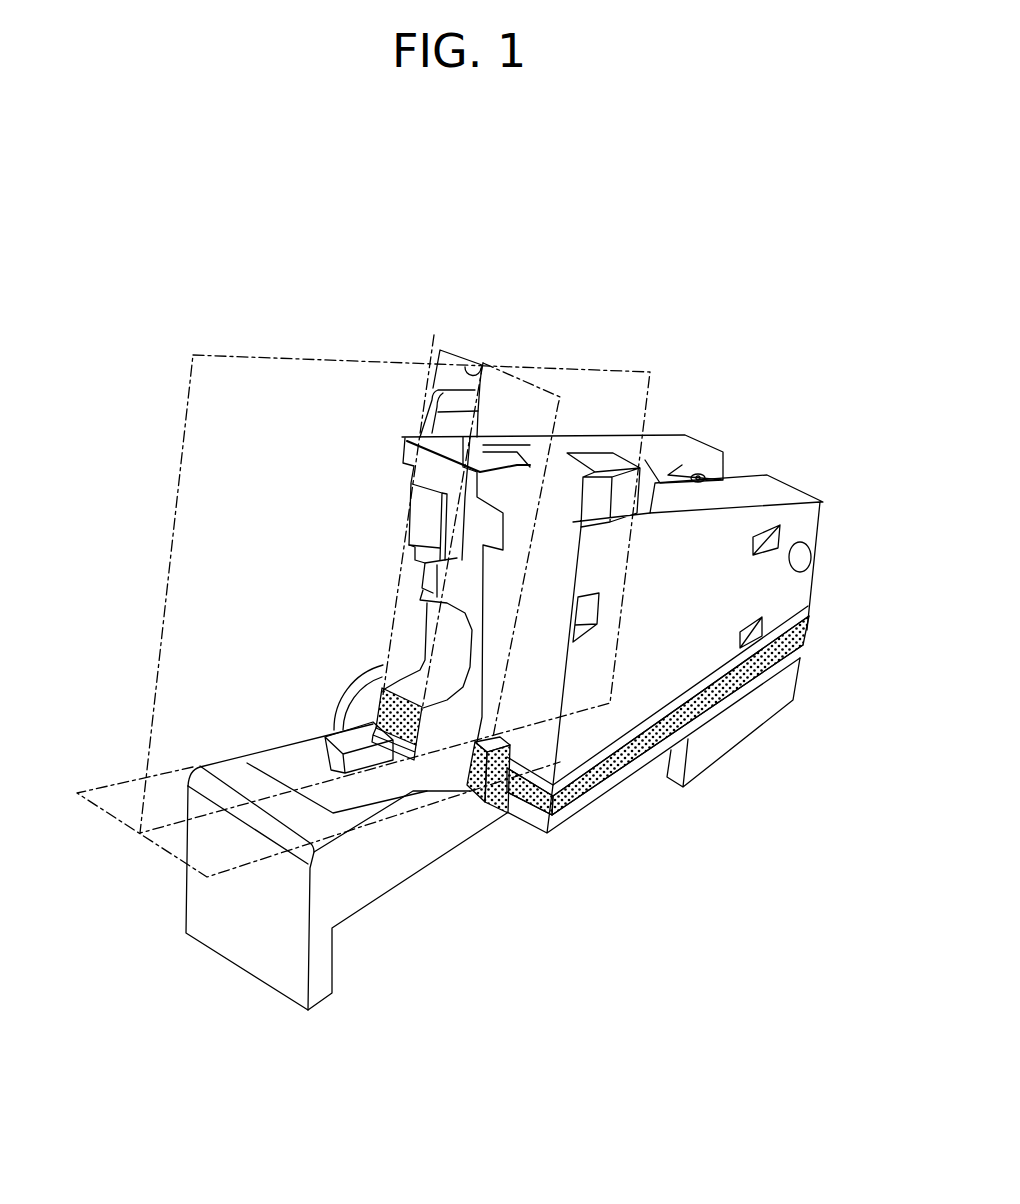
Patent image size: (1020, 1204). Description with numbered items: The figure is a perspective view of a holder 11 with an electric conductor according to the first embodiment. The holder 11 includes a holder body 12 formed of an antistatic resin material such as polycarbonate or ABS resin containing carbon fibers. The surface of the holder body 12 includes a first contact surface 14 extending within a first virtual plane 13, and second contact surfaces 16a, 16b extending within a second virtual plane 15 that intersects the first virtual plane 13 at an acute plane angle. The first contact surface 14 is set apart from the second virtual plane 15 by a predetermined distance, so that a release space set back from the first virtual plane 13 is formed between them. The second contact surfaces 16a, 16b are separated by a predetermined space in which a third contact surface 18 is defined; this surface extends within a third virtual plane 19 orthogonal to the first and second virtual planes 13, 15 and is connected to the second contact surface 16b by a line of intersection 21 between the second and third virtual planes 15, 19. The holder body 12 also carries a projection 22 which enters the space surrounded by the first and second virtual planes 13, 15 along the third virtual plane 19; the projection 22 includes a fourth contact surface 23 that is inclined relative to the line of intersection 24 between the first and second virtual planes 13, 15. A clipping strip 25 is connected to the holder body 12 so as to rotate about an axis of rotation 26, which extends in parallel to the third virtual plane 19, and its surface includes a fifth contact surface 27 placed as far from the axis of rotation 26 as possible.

The holder 11 is at (155, 351).
The holder body 12 is at (408, 460).
The first virtual plane 13 is at (118, 788).
The first contact surface 14 is at (231, 767).
The second virtual plane 15 is at (437, 355).
The second contact surface 16a is at (560, 812).
The second contact surface 16b is at (382, 690).
The third contact surface 18 is at (442, 492).
The third virtual plane 19 is at (597, 370).
The line of intersection 21 is at (466, 366).
The projection 22 is at (433, 598).
The fourth contact surface 23 is at (412, 565).
The line of intersection 24 is at (466, 765).
The clipping strip 25 is at (808, 530).
The axis of rotation 26 is at (697, 477).
The fifth contact surface 27 is at (467, 563).